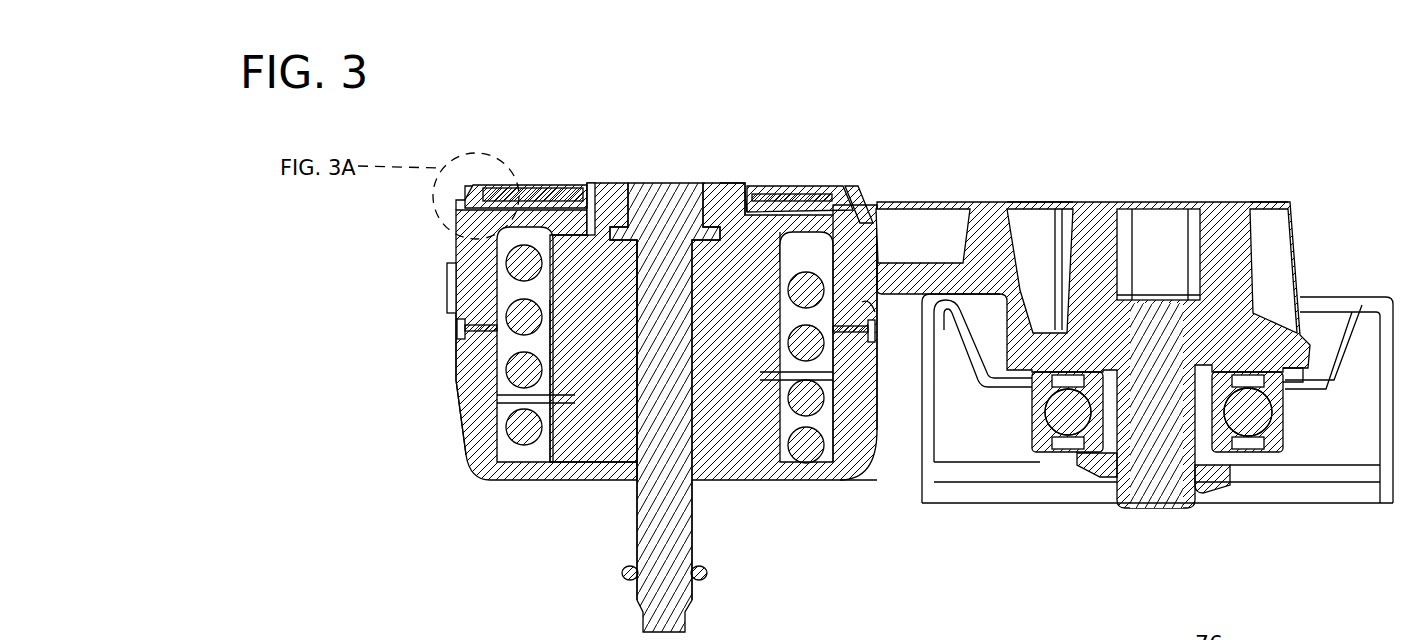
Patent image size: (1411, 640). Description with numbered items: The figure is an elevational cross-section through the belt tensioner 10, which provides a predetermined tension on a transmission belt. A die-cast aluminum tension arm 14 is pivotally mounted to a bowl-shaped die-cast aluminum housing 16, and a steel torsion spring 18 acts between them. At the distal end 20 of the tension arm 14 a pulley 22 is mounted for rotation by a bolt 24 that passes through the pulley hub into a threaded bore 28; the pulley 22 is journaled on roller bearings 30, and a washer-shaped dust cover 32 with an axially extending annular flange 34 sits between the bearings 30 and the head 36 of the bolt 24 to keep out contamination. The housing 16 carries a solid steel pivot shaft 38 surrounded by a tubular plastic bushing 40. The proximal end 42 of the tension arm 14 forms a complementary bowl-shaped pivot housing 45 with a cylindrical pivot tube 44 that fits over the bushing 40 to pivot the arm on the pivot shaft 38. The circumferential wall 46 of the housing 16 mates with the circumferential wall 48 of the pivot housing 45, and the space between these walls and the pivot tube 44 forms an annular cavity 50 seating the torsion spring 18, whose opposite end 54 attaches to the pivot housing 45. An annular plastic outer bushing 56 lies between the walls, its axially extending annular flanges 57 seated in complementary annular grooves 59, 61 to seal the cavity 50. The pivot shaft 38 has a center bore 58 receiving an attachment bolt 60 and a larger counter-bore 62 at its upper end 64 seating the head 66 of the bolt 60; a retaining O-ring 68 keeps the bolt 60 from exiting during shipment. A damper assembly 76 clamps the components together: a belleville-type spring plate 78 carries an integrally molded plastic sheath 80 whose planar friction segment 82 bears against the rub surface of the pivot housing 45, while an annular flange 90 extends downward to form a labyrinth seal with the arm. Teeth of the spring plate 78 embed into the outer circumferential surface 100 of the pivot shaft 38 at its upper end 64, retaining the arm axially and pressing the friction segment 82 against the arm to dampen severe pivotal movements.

The belt tensioner 10 is at (1048, 132).
The tension arm 14 is at (942, 222).
The housing 16 is at (478, 452).
The torsion spring 18 is at (510, 302).
The distal end 20 is at (1232, 201).
The pulley 22 is at (924, 488).
The bolt 24 is at (1148, 490).
The threaded bore 28 is at (1162, 300).
The roller bearings 30 is at (1280, 415).
The dust cover 32 is at (1053, 455).
The annular flange 34 is at (1195, 455).
The head 36 is at (1108, 468).
The pivot shaft 38 is at (562, 445).
The bushing 40 is at (790, 192).
The proximal end 42 is at (452, 228).
The pivot tube 44 is at (745, 440).
The pivot housing 45 is at (485, 283).
The circumferential wall 46 is at (470, 398).
The circumferential wall 48 is at (866, 240).
The annular cavity 50 is at (818, 375).
The opposite end 54 is at (758, 250).
The outer bushing 56 is at (455, 329).
The annular flanges 57 is at (876, 330).
The center bore 58 is at (672, 255).
The annular groove 59 is at (860, 355).
The attachment bolt 60 is at (655, 503).
The annular groove 61 is at (873, 306).
The counter-bore 62 is at (598, 195).
The upper end 64 is at (735, 183).
The head 66 is at (660, 222).
The retaining O-ring 68 is at (622, 573).
The damper assembly 76 is at (515, 190).
The spring plate 78 is at (556, 190).
The sheath 80 is at (855, 190).
The friction segment 82 is at (802, 198).
The flange 90 is at (868, 245).
The outer circumferential surface 100 is at (748, 195).